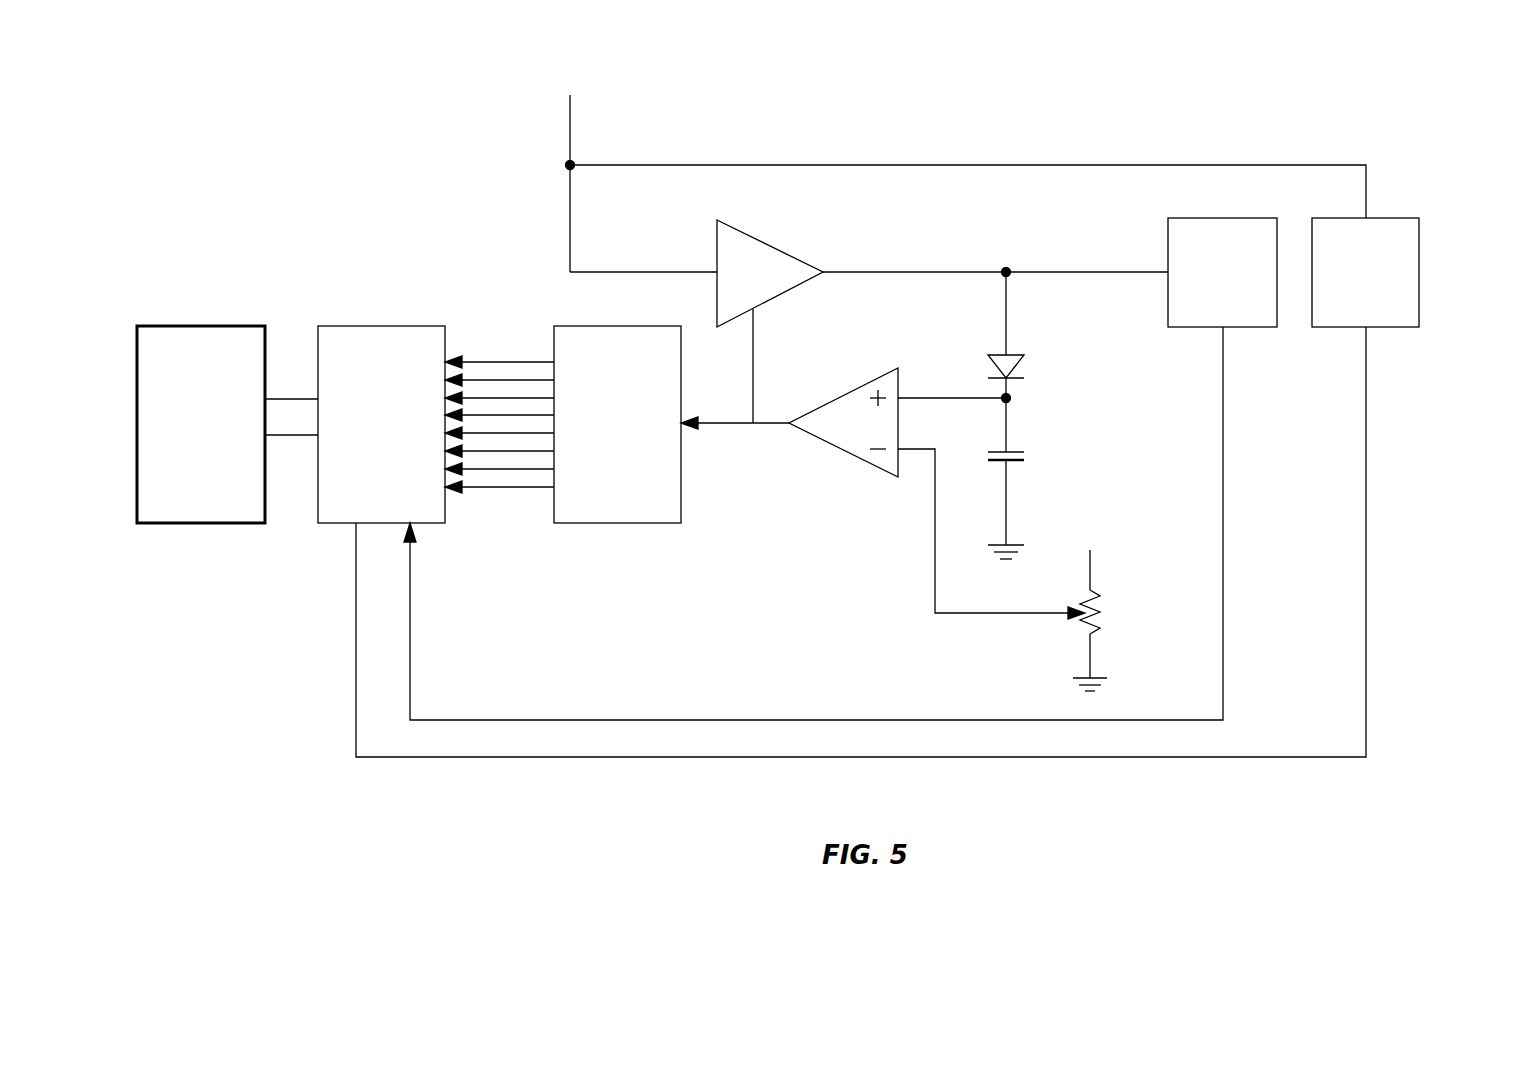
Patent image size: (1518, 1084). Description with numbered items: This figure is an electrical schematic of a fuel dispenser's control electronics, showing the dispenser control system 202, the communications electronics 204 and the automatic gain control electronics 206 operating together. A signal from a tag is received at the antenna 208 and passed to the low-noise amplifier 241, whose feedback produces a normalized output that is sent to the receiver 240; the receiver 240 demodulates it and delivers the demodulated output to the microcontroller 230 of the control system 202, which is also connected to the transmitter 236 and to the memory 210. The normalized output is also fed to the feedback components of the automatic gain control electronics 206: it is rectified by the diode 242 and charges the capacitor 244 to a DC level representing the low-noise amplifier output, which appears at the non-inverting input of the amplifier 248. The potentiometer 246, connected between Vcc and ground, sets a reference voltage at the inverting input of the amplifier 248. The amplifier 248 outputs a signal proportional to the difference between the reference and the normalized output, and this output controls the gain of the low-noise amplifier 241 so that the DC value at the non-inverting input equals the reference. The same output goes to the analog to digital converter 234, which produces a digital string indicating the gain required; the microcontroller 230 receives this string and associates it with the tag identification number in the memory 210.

The dispenser control system 202 is at (293, 248).
The communications electronics 204 is at (1398, 185).
The automatic gain control electronics 206 is at (778, 555).
The antenna 208 is at (541, 121).
The memory 210 is at (221, 450).
The microcontroller 230 is at (403, 451).
The analog to digital converter 234 is at (638, 451).
The transmitter 236 is at (1339, 305).
The receiver 240 is at (1197, 305).
The low-noise amplifier 241 is at (784, 251).
The diode 242 is at (1018, 367).
The capacitor 244 is at (1048, 458).
The potentiometer 246 is at (1122, 616).
The amplifier 248 is at (862, 460).